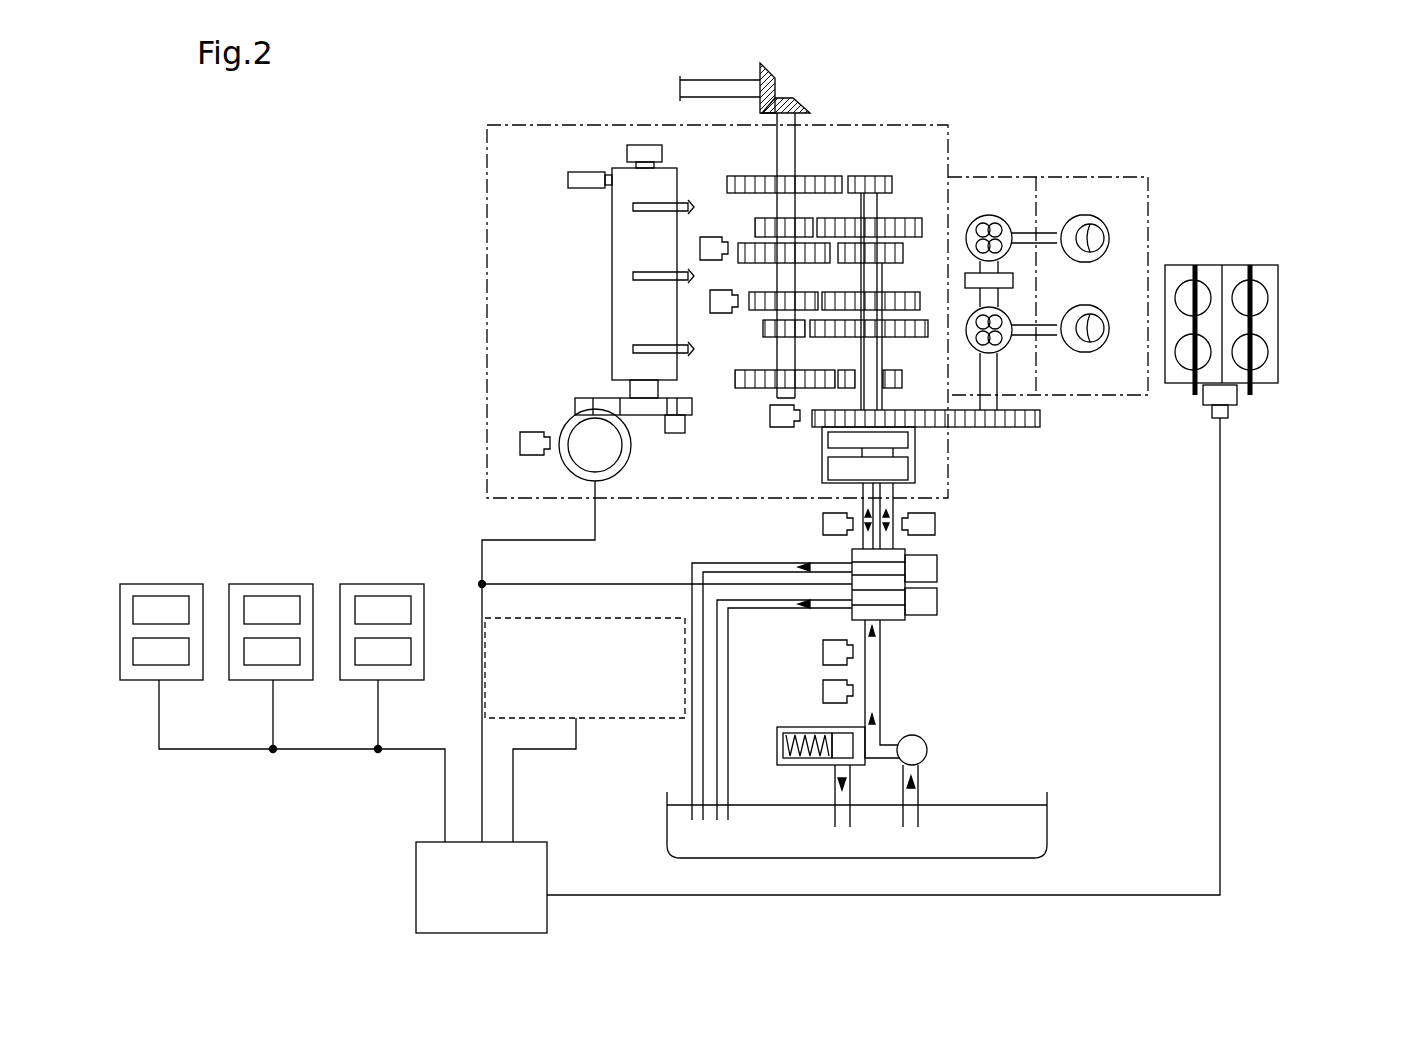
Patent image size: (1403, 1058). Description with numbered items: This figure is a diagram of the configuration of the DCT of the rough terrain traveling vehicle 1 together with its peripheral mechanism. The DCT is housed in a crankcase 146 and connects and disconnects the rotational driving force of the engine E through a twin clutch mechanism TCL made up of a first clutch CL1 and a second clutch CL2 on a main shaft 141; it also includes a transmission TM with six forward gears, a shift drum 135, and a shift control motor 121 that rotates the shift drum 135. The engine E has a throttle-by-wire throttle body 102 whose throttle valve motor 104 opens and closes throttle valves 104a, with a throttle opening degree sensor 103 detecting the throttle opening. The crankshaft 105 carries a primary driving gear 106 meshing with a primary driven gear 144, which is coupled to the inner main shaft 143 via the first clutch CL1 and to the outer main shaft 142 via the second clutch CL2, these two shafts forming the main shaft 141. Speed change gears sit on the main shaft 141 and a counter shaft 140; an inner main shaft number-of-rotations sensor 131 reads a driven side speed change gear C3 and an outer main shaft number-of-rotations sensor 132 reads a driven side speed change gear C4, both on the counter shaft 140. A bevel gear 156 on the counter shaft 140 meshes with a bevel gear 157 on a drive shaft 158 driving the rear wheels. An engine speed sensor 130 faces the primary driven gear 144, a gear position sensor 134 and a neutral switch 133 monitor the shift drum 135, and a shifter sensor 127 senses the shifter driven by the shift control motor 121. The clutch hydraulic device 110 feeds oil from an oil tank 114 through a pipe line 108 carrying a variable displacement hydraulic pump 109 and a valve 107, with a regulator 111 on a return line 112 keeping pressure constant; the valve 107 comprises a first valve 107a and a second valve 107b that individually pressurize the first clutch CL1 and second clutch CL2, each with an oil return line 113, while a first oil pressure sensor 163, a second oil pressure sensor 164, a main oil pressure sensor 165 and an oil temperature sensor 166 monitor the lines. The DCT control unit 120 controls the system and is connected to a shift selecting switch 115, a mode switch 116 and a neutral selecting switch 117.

The rough terrain traveling vehicle 1 is at (485, 188).
The throttle body 102 is at (1280, 267).
The throttle opening degree sensor 103 is at (1230, 413).
The throttle valve motor 104 is at (1240, 398).
The throttle valves 104a is at (1268, 350).
The crankshaft 105 is at (1000, 400).
The primary driving gear 106 is at (1045, 425).
The valve 107 is at (1028, 553).
The first valve 107a is at (940, 570).
The second valve 107b is at (940, 602).
The pipe line 108 is at (882, 698).
The variable displacement hydraulic pump 109 is at (928, 745).
The clutch hydraulic device 110 is at (1050, 700).
The regulator 111 is at (783, 728).
The return line 112 is at (833, 787).
The oil return line 113 is at (700, 738).
The oil tank 114 is at (665, 815).
The shift selecting switch 115 is at (177, 583).
The mode switch 116 is at (297, 583).
The neutral selecting switch 117 is at (397, 583).
The DCT control unit 120 is at (530, 842).
The shift control motor 121 is at (572, 420).
The shifter sensor 127 is at (535, 458).
The engine speed sensor 130 is at (768, 416).
The inner main shaft number-of-rotations sensor 131 is at (698, 248).
The outer main shaft number-of-rotations sensor 132 is at (708, 302).
The neutral switch 133 is at (566, 180).
The gear position sensor 134 is at (625, 154).
The shift drum 135 is at (678, 180).
The counter shaft 140 is at (796, 152).
The main shaft 141 is at (882, 272).
The outer main shaft 142 is at (884, 354).
The inner main shaft 143 is at (886, 393).
The primary driven gear 144 is at (808, 430).
The crankcase 146 is at (527, 123).
The bevel gear 156 is at (793, 100).
The bevel gear 157 is at (770, 68).
The drive shaft 158 is at (720, 80).
The first oil pressure sensor 163 is at (938, 524).
The second oil pressure sensor 164 is at (820, 524).
The main oil pressure sensor 165 is at (820, 652).
The oil temperature sensor 166 is at (820, 690).
The driven side speed change gear C3 is at (742, 240).
The driven side speed change gear C4 is at (752, 313).
The transmission TM is at (705, 445).
The first clutch CL1 is at (912, 440).
The second clutch CL2 is at (912, 470).
The twin clutch mechanism TCL is at (1018, 432).
The element DCT is at (905, 128).
The engine E is at (1128, 170).